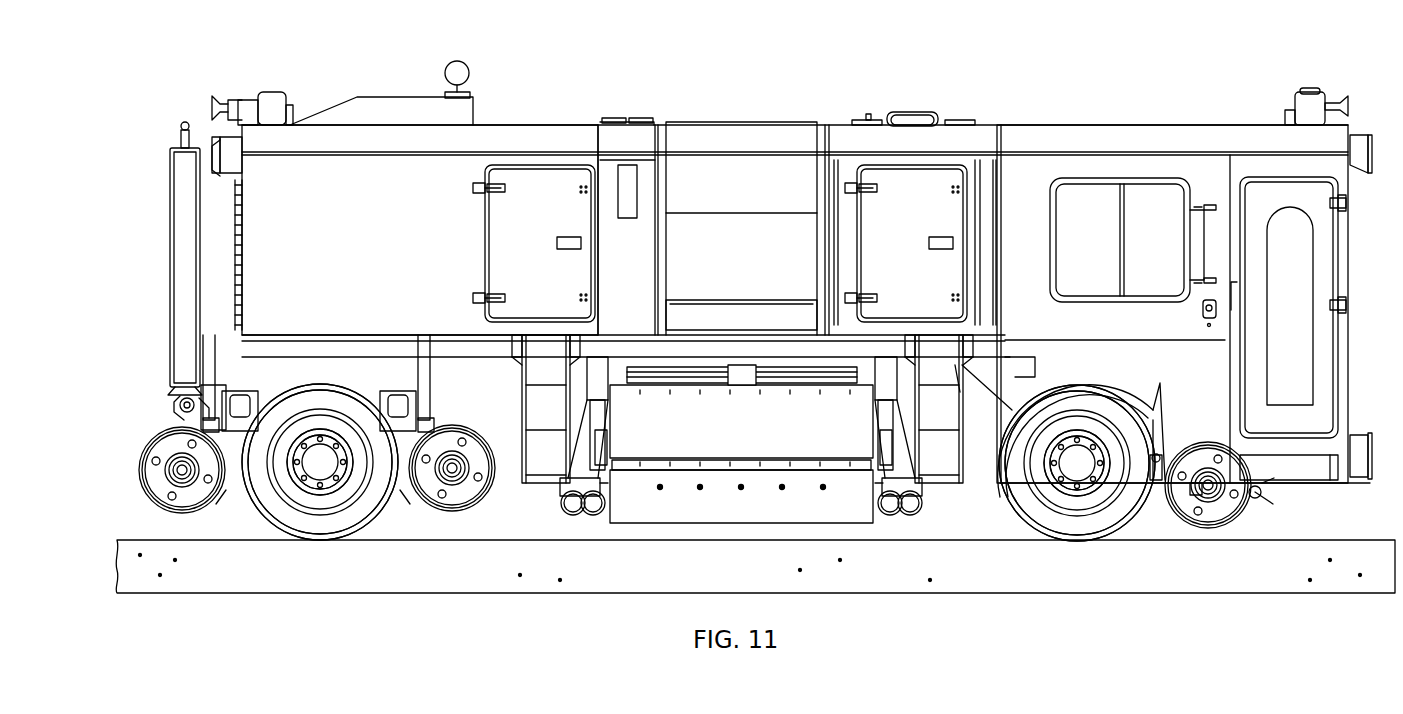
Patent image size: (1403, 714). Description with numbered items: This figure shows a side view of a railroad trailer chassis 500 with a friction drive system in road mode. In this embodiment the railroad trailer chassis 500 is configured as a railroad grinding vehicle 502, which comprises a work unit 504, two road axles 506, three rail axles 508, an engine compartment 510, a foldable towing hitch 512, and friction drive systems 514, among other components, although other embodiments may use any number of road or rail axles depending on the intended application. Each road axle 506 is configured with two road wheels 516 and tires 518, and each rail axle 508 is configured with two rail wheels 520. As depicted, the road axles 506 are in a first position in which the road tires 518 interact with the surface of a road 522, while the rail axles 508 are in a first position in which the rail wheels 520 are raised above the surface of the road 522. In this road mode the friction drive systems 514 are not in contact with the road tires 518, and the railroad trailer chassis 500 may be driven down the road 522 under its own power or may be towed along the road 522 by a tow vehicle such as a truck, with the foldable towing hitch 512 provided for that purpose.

The railroad trailer chassis 500 is at (805, 78).
The railroad grinding vehicle 502 is at (1125, 165).
The work unit 504 is at (763, 439).
The road axle 506 is at (317, 465).
The rail axle 508 is at (165, 442).
The engine compartment 510 is at (392, 252).
The foldable towing hitch 512 is at (170, 232).
The friction drive system 514 is at (233, 492).
The road wheel 516 is at (305, 470).
The tire 518 is at (385, 522).
The rail wheel 520 is at (170, 450).
The road 522 is at (405, 597).